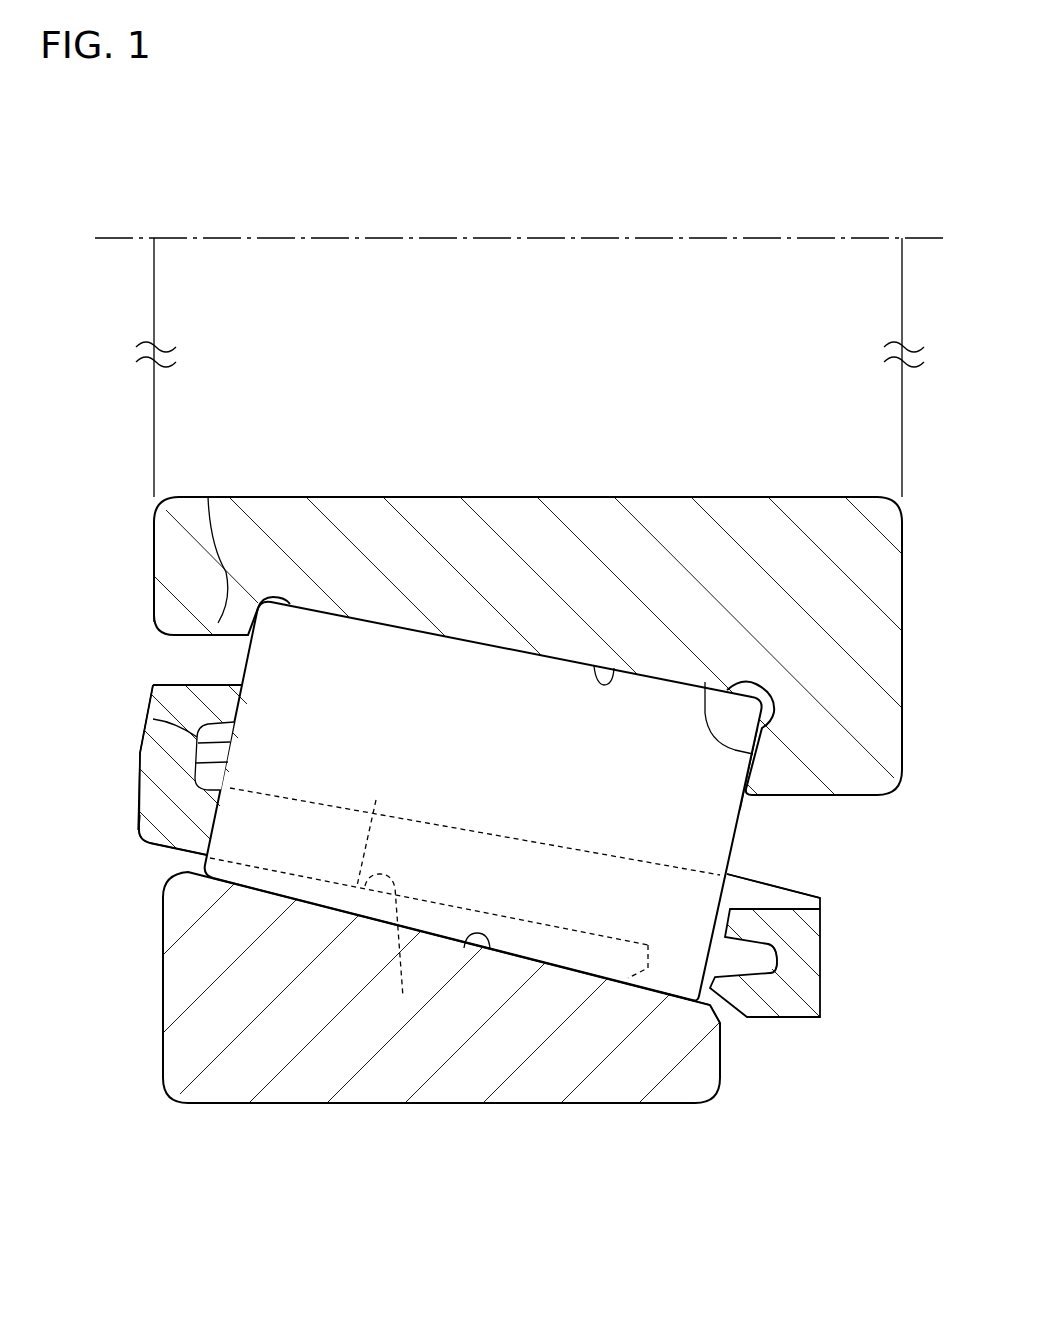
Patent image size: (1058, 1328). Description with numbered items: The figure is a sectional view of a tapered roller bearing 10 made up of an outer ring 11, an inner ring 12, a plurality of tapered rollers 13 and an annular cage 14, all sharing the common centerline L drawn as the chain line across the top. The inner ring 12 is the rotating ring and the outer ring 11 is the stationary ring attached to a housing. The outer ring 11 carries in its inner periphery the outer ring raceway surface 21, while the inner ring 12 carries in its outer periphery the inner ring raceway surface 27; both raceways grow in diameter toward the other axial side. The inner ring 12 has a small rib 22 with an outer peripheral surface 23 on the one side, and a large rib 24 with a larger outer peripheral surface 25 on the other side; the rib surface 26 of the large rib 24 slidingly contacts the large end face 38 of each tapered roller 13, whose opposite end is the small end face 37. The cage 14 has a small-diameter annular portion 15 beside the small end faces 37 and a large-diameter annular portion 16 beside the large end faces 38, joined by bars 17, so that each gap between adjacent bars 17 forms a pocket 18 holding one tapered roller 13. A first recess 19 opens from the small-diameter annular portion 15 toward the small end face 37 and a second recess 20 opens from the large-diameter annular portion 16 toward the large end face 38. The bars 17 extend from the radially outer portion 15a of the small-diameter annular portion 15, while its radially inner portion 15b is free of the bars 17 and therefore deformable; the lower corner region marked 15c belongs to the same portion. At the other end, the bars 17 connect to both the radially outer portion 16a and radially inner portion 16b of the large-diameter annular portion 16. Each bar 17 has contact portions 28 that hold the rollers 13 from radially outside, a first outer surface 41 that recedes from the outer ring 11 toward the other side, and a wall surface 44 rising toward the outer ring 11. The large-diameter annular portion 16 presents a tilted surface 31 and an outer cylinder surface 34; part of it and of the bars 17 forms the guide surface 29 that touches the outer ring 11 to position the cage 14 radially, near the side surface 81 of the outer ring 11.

The centerline L is at (760, 246).
The tapered roller bearing 10 is at (148, 540).
The outer ring 11 is at (163, 985).
The inner ring 12 is at (151, 593).
The tapered roller 13 is at (533, 655).
The cage 14 is at (134, 770).
The small-diameter annular portion 15 is at (138, 793).
The radially outer portion 15a is at (141, 832).
The radially inner portion 15b is at (208, 700).
The lower surface of first holding member 15c is at (165, 850).
The large-diameter annular portion 16 is at (800, 962).
The radially outer portion 16a is at (797, 1000).
The radially inner portion 16b is at (797, 921).
The bar 17 is at (433, 824).
The pocket 18 is at (309, 878).
The first recess 19 is at (230, 765).
The second recess 20 is at (768, 957).
The outer ring raceway surface 21 is at (490, 949).
The small rib 22 is at (208, 497).
The outer peripheral surface 23 is at (214, 635).
The large rib 24 is at (827, 767).
The outer peripheral surface 25 is at (845, 797).
The rib surface 26 is at (705, 682).
The inner ring raceway surface 27 is at (604, 666).
The contact portion 28 is at (403, 997).
The guide surface 29 is at (688, 1003).
The tilted surface 31 is at (723, 1010).
The outer cylinder surface 34 is at (793, 1018).
The small end face 37 is at (153, 719).
The large end face 38 is at (740, 830).
The first outer surface 41 is at (533, 932).
The wall surface 44 is at (628, 978).
The side surface 81 is at (722, 1052).